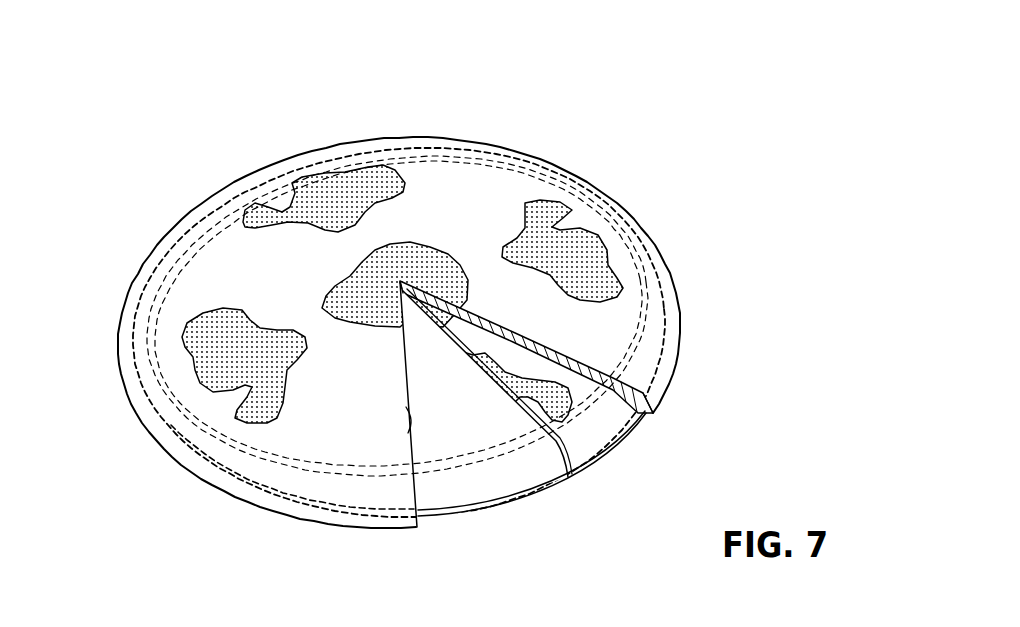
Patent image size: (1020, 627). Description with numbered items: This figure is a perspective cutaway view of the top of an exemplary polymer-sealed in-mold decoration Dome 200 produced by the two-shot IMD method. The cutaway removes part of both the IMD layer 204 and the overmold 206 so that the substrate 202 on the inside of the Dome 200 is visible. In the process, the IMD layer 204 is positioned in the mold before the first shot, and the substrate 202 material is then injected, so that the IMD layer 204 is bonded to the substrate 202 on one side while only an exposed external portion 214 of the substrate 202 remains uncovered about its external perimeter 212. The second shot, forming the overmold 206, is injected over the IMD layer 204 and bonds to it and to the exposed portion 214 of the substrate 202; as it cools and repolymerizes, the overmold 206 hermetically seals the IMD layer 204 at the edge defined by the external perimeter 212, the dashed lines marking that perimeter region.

The Dome 200 is at (650, 98).
The substrate 202 is at (470, 487).
The IMD layer 204 is at (593, 431).
The overmold 206 is at (655, 342).
The external perimeter 212 is at (130, 322).
The exposed external portion 214 is at (523, 493).